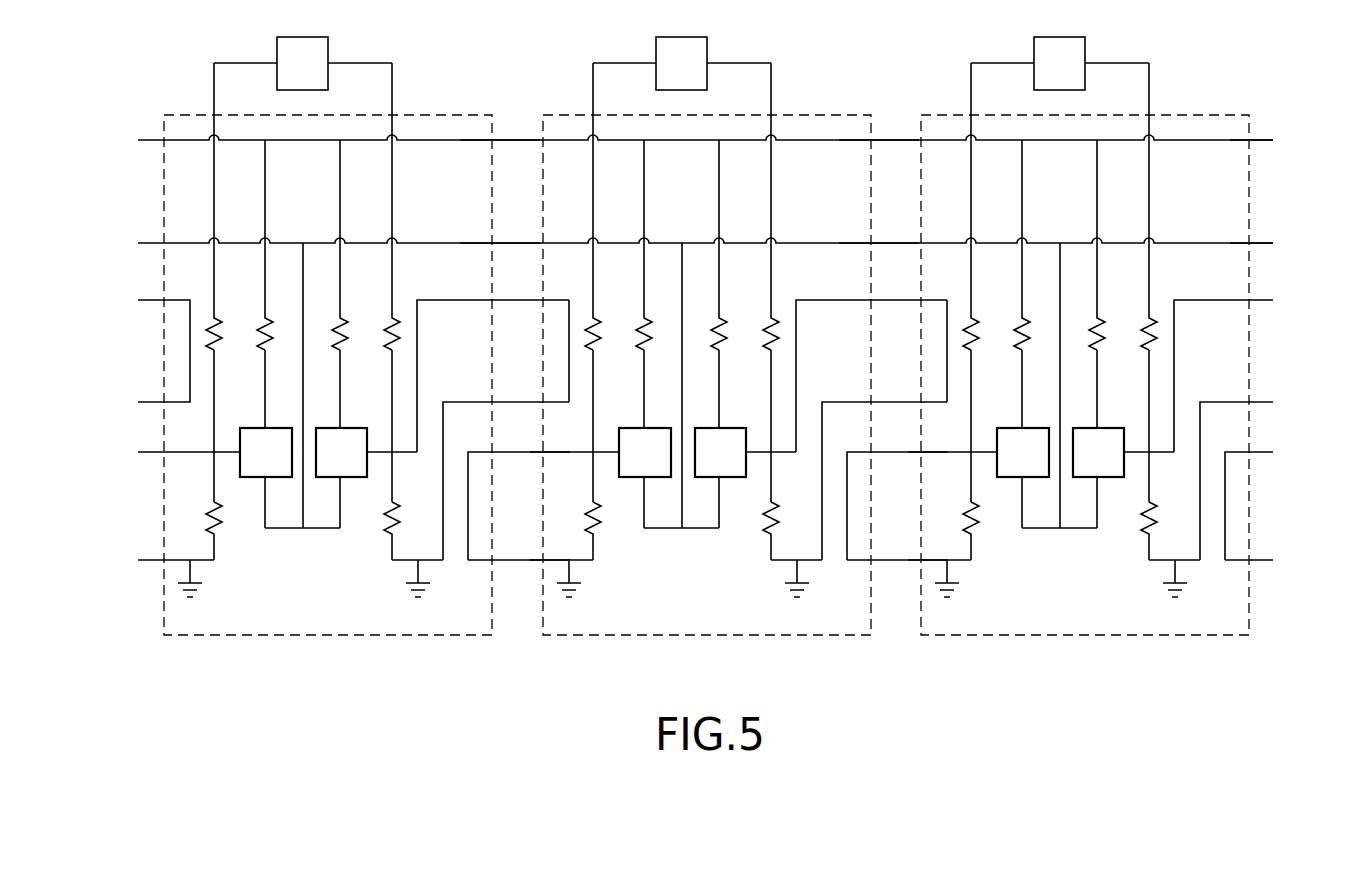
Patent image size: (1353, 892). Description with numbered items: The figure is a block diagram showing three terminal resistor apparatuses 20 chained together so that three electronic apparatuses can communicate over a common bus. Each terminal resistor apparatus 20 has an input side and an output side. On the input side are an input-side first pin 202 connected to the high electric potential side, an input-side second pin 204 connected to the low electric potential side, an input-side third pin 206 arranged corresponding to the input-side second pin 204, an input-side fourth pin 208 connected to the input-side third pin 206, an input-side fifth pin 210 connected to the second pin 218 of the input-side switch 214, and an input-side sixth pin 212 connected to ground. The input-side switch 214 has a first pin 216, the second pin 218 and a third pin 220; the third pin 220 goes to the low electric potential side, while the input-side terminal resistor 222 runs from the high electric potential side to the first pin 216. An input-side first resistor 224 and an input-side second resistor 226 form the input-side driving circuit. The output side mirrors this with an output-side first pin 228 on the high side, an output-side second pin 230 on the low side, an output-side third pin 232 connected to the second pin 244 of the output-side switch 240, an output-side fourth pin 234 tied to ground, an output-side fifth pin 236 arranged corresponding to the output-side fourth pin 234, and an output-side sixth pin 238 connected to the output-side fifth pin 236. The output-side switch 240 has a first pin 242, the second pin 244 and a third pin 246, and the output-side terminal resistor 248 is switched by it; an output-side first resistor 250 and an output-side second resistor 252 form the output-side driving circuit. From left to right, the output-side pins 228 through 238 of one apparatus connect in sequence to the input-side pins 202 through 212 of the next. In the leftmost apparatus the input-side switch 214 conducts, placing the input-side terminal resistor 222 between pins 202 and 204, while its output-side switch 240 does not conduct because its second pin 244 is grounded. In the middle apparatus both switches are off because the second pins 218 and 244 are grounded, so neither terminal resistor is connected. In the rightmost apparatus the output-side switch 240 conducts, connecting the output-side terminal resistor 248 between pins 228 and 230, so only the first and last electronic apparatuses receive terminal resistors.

The terminal resistor apparatus 20 is at (1154, 660).
The input-side first pin 202 is at (150, 140).
The input-side second pin 204 is at (150, 243).
The input-side third pin 206 is at (150, 300).
The input-side fourth pin 208 is at (150, 402).
The input-side fifth pin 210 is at (150, 452).
The input-side sixth pin 212 is at (150, 560).
The input-side switch 214 is at (644, 452).
The first pin of input-side switch 216 is at (1025, 420).
The second pin of input-side switch 218 is at (995, 432).
The third pin of input-side switch 220 is at (1022, 487).
The input-side terminal resistor 222 is at (1016, 332).
The input-side first resistor 224 is at (965, 332).
The input-side second resistor 226 is at (967, 517).
The output-side first pin 228 is at (1302, 104).
The output-side second pin 230 is at (1302, 206).
The output-side third pin 232 is at (1302, 263).
The output-side fourth pin 234 is at (1302, 363).
The output-side fifth pin 236 is at (1302, 414).
The output-side sixth pin 238 is at (1302, 519).
The output-side switch 240 is at (720, 452).
The first pin of output-side switch 242 is at (1097, 418).
The second pin of output-side switch 244 is at (1140, 440).
The third pin of output-side switch 246 is at (1098, 487).
The output-side terminal resistor 248 is at (1091, 332).
The output-side first resistor 250 is at (1141, 332).
The output-side second resistor 252 is at (1155, 517).